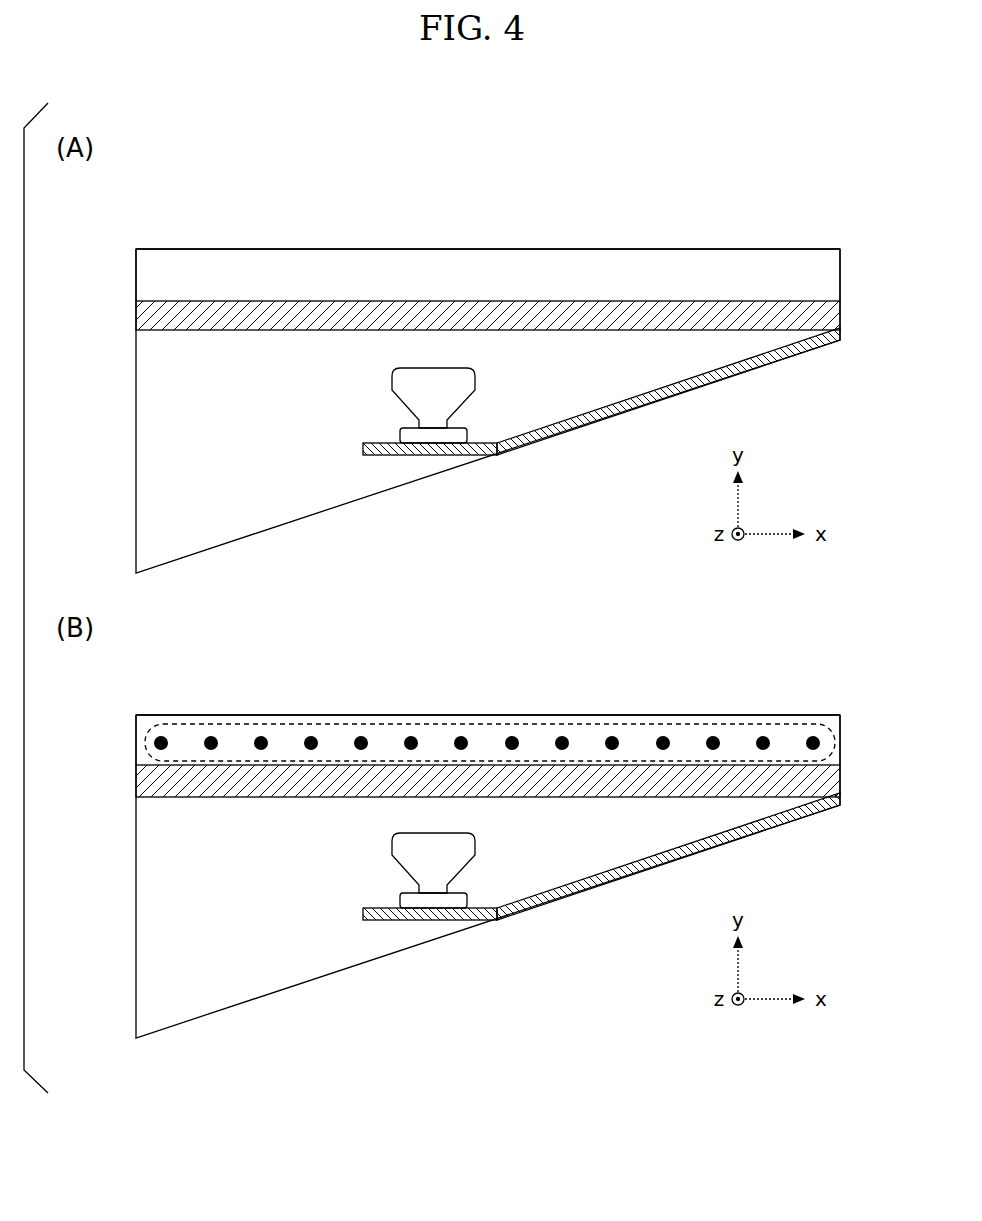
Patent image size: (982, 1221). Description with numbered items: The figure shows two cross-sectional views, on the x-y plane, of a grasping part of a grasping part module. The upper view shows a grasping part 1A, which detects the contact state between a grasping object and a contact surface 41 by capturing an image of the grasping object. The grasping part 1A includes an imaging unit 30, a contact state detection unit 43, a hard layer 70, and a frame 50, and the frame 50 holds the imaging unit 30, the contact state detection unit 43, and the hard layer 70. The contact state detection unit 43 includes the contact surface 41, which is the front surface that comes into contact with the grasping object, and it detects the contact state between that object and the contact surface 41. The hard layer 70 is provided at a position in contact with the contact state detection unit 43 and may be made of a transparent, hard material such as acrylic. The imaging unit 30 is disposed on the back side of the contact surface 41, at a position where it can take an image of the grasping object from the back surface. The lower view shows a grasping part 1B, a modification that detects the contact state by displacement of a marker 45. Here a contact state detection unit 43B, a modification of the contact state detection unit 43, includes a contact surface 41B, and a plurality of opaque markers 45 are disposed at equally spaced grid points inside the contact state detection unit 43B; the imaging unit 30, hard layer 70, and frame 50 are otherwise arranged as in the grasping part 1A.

The grasping part 1A is at (839, 221).
The grasping part 1B is at (839, 688).
The contact surface 41 is at (764, 247).
The contact surface 41B is at (763, 713).
The contact state detection unit 43 is at (136, 275).
The contact state detection unit 43B is at (136, 743).
The marker 45 is at (634, 724).
The hard layer 70 is at (136, 318).
The imaging unit 30 is at (397, 405).
The frame 50 is at (393, 455).